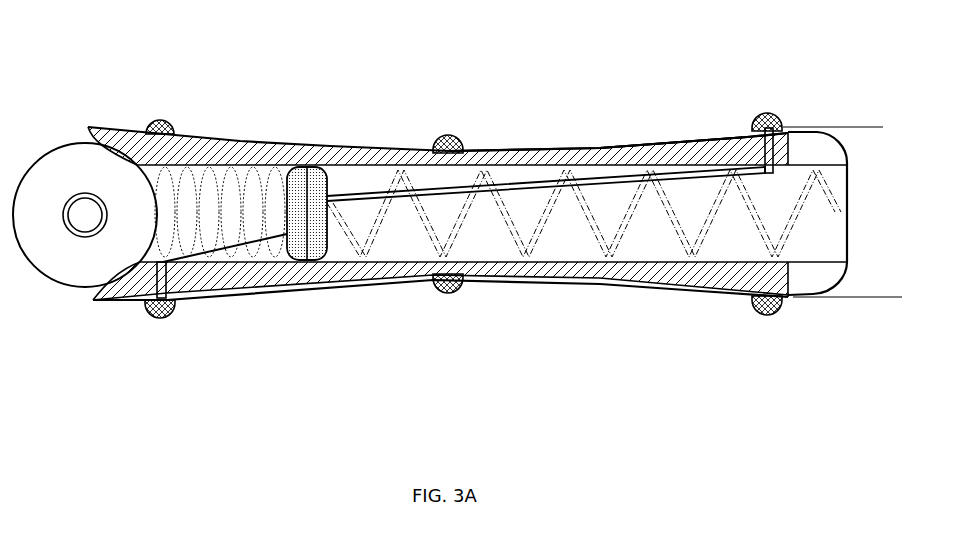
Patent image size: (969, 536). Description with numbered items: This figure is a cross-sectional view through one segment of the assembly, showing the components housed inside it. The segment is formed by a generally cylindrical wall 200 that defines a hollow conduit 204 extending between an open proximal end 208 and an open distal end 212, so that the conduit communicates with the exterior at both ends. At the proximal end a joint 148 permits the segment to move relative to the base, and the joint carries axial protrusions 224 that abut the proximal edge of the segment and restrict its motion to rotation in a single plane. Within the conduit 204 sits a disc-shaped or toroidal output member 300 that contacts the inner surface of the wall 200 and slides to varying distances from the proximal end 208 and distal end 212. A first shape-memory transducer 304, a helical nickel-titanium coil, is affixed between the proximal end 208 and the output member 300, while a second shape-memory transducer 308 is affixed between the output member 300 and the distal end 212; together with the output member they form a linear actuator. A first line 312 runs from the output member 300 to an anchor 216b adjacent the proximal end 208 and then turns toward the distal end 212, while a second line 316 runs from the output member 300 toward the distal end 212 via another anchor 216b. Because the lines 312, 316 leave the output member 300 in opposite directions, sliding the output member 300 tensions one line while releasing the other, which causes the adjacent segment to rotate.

The joint 148 is at (50, 272).
The axial protrusions 224 is at (83, 222).
The proximal end 208 is at (88, 122).
The second line 316 is at (607, 147).
The cylindrical wall 200 is at (657, 145).
The conduit 204 is at (557, 243).
The distal end 212 is at (847, 192).
The output member 300 is at (313, 183).
The first shape-memory transducer 304 is at (236, 178).
The second shape-memory transducer 308 is at (565, 178).
The first line 312 is at (243, 238).
The anchors 216b is at (165, 115).